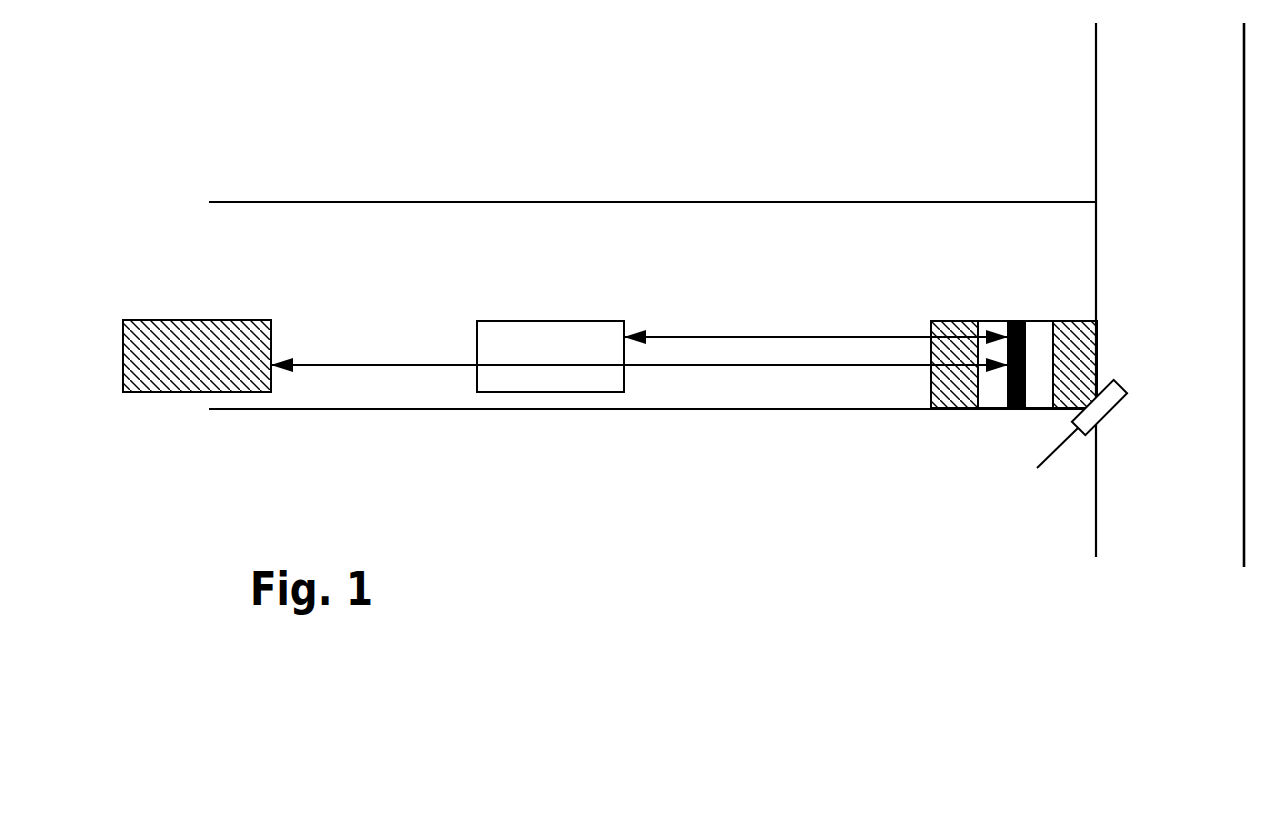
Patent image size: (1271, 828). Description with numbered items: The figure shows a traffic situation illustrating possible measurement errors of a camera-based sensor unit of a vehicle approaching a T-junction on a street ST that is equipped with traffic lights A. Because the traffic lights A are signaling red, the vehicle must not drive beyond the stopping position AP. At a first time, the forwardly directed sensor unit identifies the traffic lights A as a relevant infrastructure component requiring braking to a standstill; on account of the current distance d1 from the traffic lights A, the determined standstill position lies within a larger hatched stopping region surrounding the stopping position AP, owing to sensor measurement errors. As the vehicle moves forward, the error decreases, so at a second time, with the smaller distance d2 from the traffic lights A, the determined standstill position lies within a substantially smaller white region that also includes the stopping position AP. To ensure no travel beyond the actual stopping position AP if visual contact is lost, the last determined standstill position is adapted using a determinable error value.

The street / road ST is at (1127, 182).
The distance at time t1 d1 is at (639, 348).
The distance at time t2 d2 is at (816, 321).
The stopping position AP is at (1017, 321).
The traffic lights A is at (1113, 400).